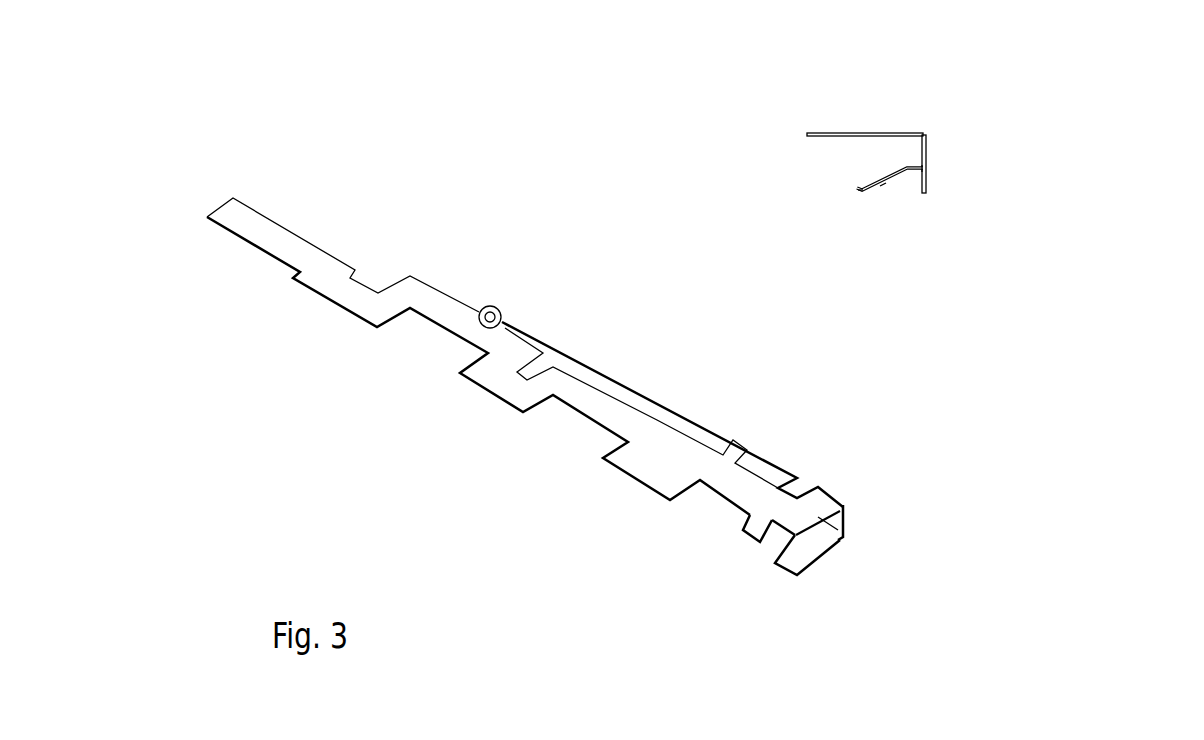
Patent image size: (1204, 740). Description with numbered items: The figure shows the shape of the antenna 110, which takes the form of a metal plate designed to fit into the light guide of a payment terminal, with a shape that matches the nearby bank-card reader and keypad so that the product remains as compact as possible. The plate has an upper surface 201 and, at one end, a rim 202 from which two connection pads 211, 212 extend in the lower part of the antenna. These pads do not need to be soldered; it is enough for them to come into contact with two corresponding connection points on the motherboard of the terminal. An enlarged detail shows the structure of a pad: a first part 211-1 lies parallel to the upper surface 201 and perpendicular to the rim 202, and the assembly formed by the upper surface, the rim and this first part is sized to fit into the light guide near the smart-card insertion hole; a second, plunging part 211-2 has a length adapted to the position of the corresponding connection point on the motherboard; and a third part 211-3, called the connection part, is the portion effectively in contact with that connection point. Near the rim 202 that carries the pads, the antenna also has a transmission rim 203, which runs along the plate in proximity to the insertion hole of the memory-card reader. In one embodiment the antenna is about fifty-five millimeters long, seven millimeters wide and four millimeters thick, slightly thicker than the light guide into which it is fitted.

The antenna 110 is at (478, 258).
The upper surface of the antenna 201 is at (608, 420).
The rim 202 is at (847, 513).
The transmission rim 203 is at (592, 365).
The connection pad 211 is at (743, 530).
The first part 211-1 is at (927, 172).
The second plunging part 211-2 is at (883, 192).
The third connection part 211-3 is at (862, 192).
The connection pad 212 is at (777, 563).